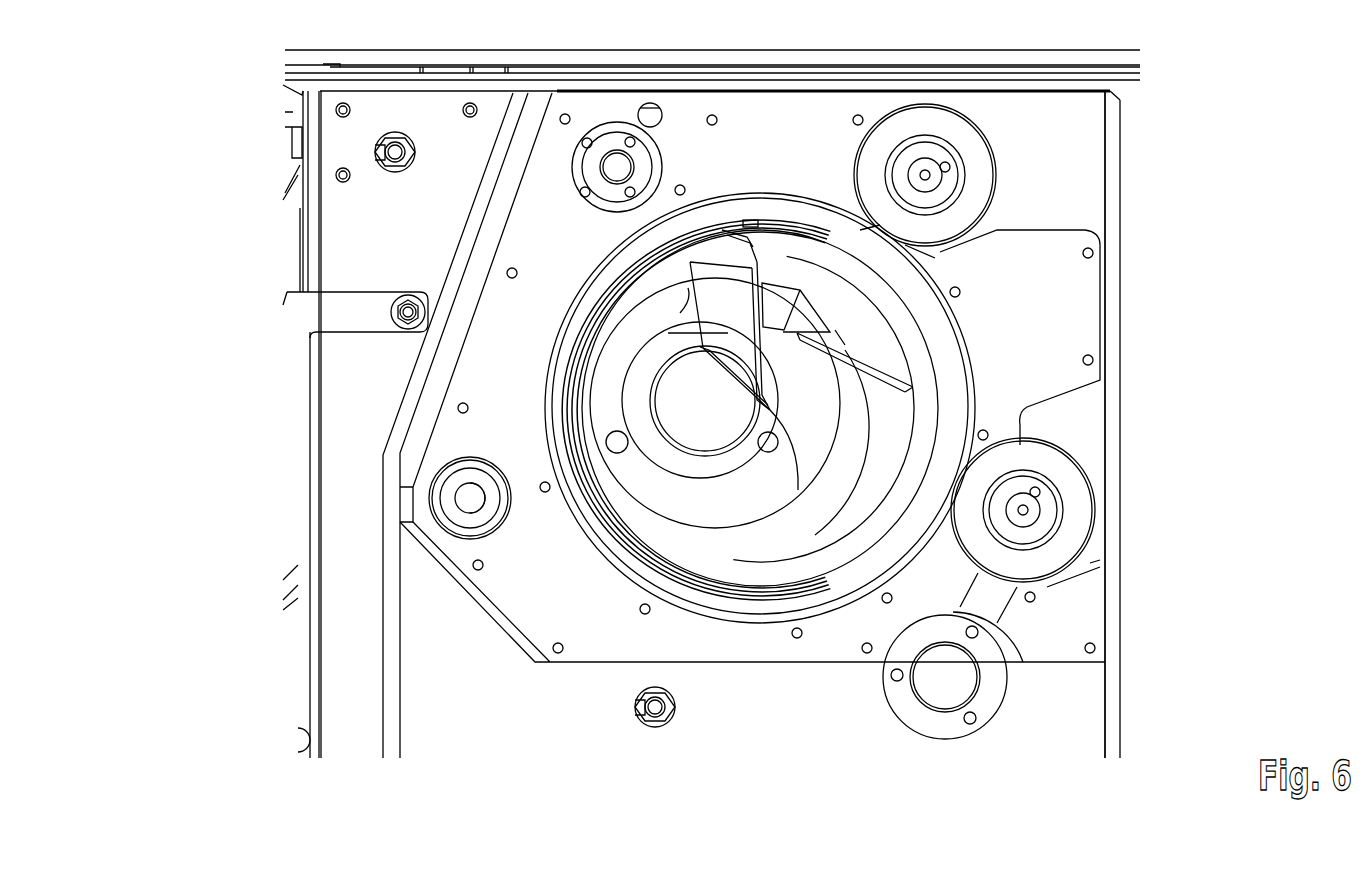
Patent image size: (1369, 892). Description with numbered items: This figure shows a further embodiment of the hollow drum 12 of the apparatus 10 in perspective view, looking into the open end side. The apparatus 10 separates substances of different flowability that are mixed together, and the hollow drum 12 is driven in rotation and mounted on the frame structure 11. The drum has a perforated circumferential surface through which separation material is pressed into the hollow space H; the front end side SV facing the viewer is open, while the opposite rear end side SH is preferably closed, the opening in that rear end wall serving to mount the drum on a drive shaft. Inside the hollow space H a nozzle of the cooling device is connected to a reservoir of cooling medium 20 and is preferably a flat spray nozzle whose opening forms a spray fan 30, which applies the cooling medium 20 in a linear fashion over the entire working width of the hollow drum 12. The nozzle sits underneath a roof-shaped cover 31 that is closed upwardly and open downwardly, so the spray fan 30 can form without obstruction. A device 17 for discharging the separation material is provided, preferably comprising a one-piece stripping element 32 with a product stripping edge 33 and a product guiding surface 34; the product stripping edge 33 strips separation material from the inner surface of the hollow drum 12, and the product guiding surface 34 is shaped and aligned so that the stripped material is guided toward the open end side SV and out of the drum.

The apparatus 10 is at (219, 384).
The frame structure 11 is at (1110, 135).
The hollow drum 12 is at (916, 333).
The device for discharging separation material 17 is at (690, 322).
The cooling medium 20 is at (893, 365).
The spray fan 30 is at (872, 380).
The cover 31 is at (780, 290).
The stripping element 32 is at (699, 284).
The product stripping edge 33 is at (728, 245).
The product guiding surface 34 is at (700, 323).
The rear end side SH is at (720, 540).
The hollow space H is at (758, 530).
The open end side SV is at (808, 570).